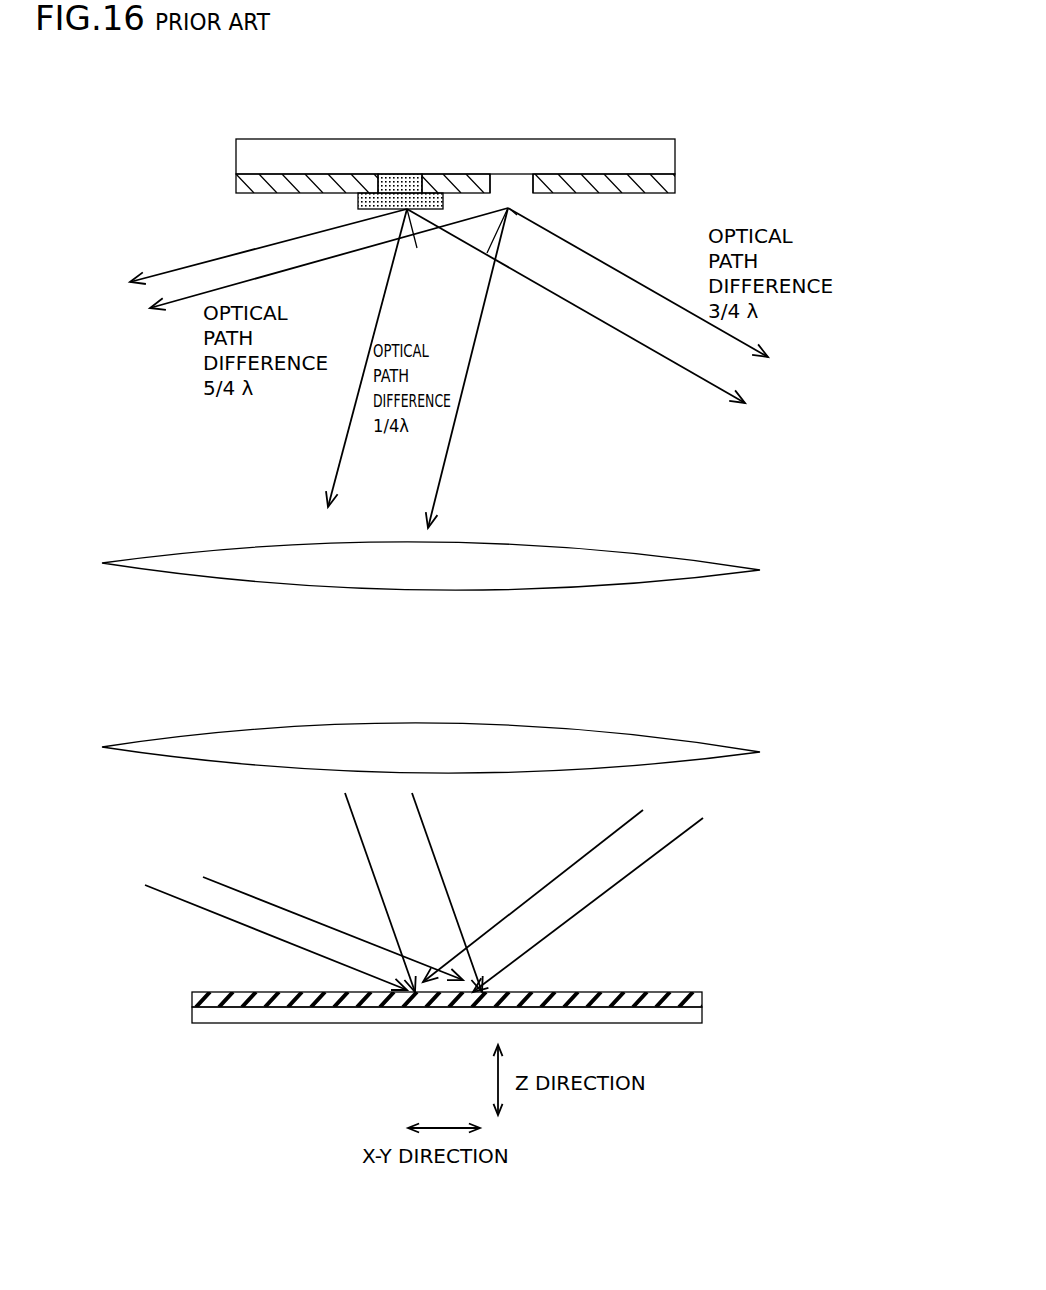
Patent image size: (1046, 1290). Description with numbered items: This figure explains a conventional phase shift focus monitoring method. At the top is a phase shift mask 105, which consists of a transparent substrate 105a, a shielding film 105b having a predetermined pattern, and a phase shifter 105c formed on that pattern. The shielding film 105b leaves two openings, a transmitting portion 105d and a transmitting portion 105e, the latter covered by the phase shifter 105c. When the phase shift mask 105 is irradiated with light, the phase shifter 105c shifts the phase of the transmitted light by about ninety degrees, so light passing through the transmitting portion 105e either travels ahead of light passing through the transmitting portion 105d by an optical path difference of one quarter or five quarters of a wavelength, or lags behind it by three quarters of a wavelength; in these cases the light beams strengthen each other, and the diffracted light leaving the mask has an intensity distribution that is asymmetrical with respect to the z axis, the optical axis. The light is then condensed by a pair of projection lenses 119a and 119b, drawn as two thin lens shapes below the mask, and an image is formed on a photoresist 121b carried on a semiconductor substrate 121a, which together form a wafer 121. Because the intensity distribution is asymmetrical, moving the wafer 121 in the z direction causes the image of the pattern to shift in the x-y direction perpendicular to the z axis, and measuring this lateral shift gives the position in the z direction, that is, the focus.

The phase shift mask 105 is at (507, 151).
The transparent substrate 105a is at (645, 158).
The shielding film 105b is at (645, 185).
The phase shifter 105c is at (358, 204).
The transmitting portion 105d is at (508, 183).
The transmitting portion 105e is at (391, 178).
The projection lens 119a is at (650, 568).
The projection lens 119b is at (650, 750).
The wafer 121 is at (512, 1013).
The semiconductor substrate 121a is at (682, 1018).
The photoresist 121b is at (682, 1003).